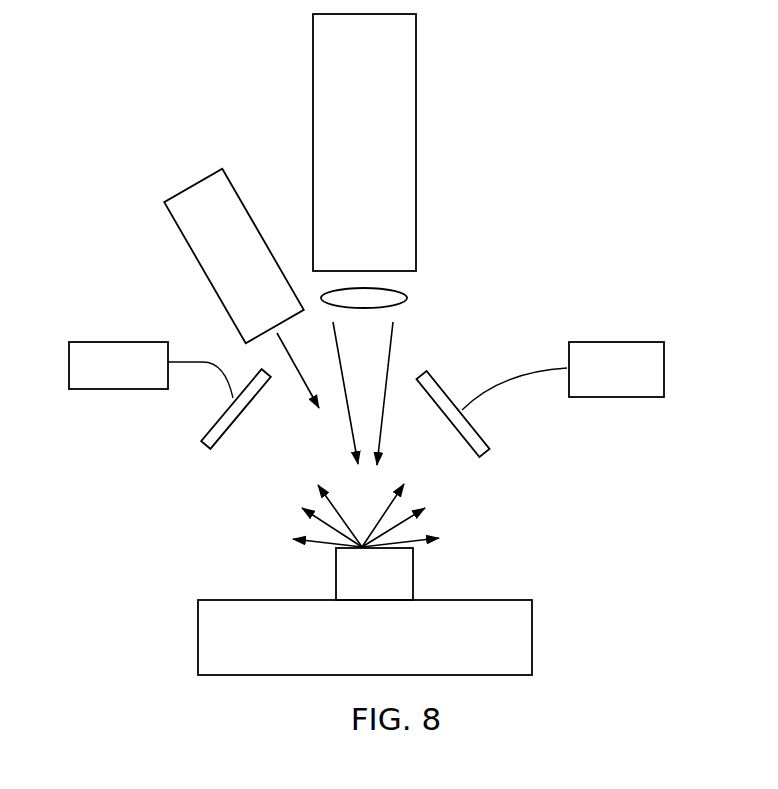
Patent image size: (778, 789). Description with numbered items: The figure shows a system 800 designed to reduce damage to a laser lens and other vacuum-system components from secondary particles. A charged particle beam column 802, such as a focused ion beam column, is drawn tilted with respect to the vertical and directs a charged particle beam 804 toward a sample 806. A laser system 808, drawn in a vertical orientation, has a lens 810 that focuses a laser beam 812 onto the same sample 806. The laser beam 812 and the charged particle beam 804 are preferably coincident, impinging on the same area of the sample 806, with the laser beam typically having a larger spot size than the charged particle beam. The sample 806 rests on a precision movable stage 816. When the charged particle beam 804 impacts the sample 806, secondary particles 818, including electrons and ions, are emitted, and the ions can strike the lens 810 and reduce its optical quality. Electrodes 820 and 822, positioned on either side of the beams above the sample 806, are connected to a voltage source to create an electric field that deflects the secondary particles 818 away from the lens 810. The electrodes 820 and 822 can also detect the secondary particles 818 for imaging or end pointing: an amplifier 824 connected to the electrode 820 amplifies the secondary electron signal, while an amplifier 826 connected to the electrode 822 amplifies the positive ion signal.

The system 800 is at (162, 62).
The charged particle beam column 802 is at (183, 235).
The charged particle beam 804 is at (292, 383).
The sample 806 is at (413, 587).
The laser system 808 is at (416, 128).
The lens 810 is at (402, 293).
The laser beam 812 is at (390, 345).
The precision movable stage 816 is at (532, 617).
The secondary particles 818 is at (322, 515).
The electrode 820 is at (200, 430).
The electrode 822 is at (485, 438).
The amplifier 824 is at (143, 342).
The amplifier 826 is at (589, 342).